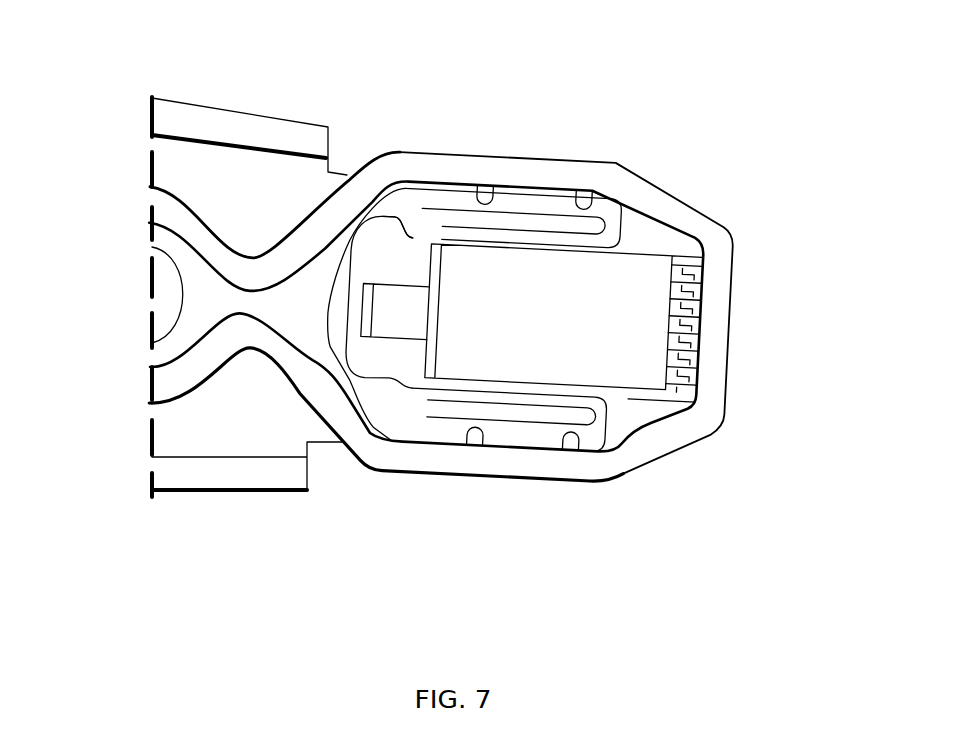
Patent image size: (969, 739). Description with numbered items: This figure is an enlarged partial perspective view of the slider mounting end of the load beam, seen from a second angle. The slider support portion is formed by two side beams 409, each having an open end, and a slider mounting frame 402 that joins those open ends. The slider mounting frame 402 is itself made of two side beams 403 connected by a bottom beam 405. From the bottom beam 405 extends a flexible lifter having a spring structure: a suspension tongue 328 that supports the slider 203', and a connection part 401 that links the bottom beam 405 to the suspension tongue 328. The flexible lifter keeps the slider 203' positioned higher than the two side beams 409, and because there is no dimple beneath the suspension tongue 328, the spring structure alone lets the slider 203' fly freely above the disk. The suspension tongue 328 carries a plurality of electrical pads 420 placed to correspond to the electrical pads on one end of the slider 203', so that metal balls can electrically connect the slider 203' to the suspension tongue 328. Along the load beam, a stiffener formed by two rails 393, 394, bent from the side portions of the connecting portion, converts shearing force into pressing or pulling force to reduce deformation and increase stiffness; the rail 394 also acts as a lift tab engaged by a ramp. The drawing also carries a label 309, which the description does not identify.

The slider 203' is at (607, 214).
The housing 309 is at (365, 448).
The suspension tongue 328 is at (563, 384).
The rail 393 is at (220, 473).
The rail 394 is at (220, 121).
The connection part 401 is at (400, 317).
The slider mounting frame 402 is at (425, 231).
The side beams 403 is at (445, 398).
The bottom beam 405 is at (353, 322).
The side beams 409 is at (508, 435).
The electrical pads 420 is at (697, 297).